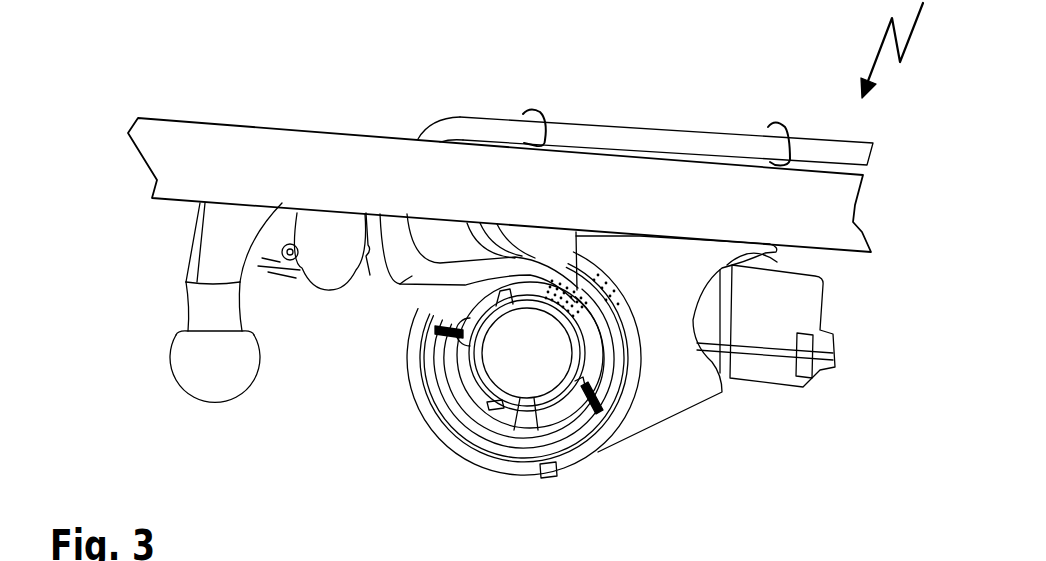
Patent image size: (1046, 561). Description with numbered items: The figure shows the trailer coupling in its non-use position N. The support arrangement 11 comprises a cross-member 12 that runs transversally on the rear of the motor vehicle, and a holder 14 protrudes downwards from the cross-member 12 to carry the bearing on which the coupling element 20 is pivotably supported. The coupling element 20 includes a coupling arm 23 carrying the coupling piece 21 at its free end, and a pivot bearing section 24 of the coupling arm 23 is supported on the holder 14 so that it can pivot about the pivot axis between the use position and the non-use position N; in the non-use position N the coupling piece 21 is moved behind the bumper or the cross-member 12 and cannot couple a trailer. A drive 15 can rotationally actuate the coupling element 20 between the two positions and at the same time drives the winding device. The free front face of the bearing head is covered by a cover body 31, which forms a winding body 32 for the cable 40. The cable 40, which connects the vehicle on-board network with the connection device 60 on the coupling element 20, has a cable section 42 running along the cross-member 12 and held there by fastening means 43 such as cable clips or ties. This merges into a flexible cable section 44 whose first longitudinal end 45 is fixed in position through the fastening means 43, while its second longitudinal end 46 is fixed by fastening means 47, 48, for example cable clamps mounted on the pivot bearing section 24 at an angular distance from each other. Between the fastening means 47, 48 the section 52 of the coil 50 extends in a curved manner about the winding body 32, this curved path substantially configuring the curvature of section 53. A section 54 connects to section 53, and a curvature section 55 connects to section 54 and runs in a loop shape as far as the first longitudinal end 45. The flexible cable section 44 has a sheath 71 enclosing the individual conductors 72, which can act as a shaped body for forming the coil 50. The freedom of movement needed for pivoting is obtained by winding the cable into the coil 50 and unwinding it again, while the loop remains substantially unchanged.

The support arrangement 11 is at (497, 291).
The cross-member 12 is at (248, 132).
The holder 14 is at (749, 348).
The drive 15 is at (823, 317).
The coupling element 20 is at (177, 350).
The coupling piece 21 is at (182, 378).
The coupling arm 23 is at (187, 243).
The pivot bearing section 24 is at (520, 399).
The cover body 31 is at (533, 392).
The winding body 32 is at (524, 393).
The cable 40 is at (645, 99).
The cable section 42 is at (663, 125).
The fastening means 43 is at (540, 113).
The cable section 44 is at (406, 292).
The first longitudinal end 45 is at (463, 118).
The second longitudinal end 46 is at (607, 367).
The fastening means 47 is at (435, 330).
The fastening means 48 is at (600, 412).
The coil 50 is at (443, 388).
The section 52 is at (510, 432).
The section 53 is at (592, 327).
The section 54 is at (513, 277).
The curvature section 55 is at (408, 275).
The connection device 60 is at (302, 290).
The sheath 71 is at (607, 340).
The single conductors 72 is at (621, 283).
The non-use position N is at (161, 334).